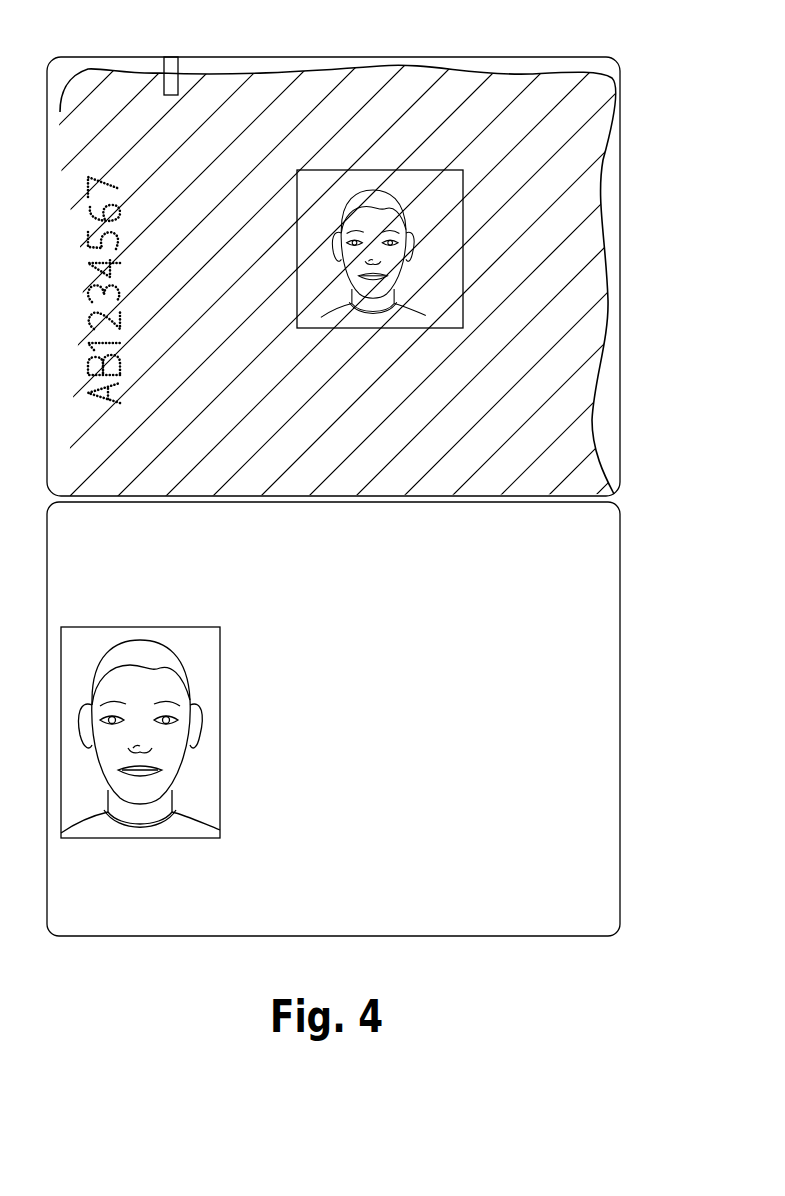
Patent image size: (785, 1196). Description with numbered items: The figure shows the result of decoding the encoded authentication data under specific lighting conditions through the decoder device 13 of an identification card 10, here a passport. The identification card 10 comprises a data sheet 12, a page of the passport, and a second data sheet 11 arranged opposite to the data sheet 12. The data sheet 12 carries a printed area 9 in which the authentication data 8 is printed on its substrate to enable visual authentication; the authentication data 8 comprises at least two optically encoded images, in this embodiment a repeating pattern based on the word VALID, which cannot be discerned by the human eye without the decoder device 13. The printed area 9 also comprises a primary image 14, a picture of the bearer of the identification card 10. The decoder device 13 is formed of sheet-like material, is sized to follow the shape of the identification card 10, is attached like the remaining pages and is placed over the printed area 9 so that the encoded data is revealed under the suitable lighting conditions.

The authentication data 8 is at (443, 330).
The printed area 9 is at (463, 281).
The identification card 10 is at (736, 443).
The second data sheet 11 is at (605, 773).
The data sheet 12 is at (613, 230).
The decoder device 13 is at (598, 193).
The primary image 14 is at (388, 188).